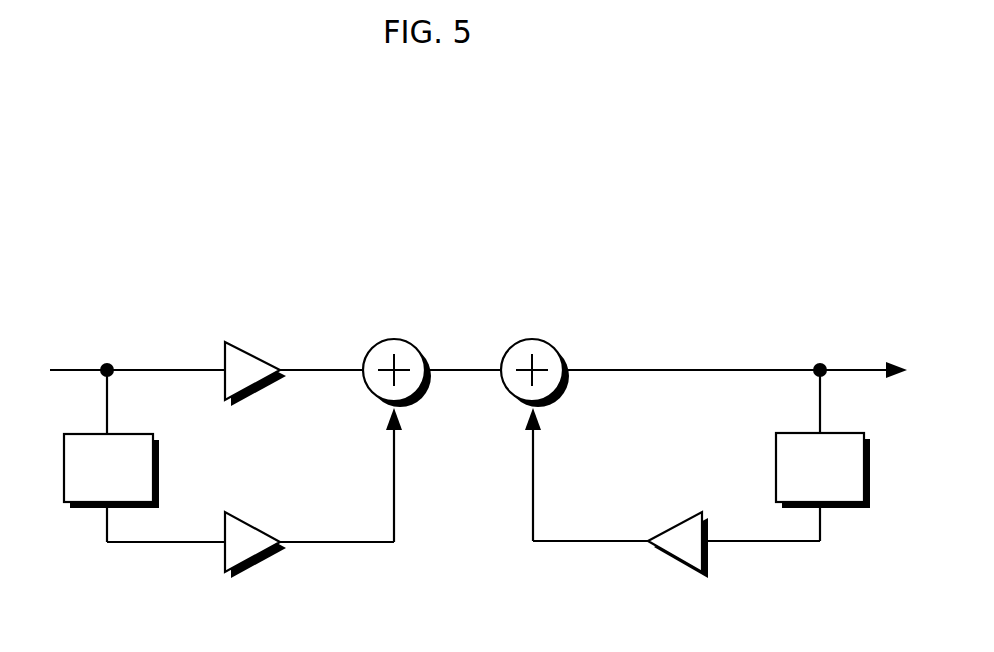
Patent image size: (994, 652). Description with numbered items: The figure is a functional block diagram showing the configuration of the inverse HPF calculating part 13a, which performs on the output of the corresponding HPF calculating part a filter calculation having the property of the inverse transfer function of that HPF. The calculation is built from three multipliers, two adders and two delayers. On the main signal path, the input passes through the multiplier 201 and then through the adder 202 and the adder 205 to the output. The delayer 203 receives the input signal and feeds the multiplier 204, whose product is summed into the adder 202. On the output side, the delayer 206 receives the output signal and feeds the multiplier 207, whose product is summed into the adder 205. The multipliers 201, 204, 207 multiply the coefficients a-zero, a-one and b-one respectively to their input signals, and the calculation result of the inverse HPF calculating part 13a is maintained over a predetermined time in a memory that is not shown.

The inverse HPF calculating part 13a is at (726, 242).
The multiplier 201 is at (252, 350).
The adder 202 is at (398, 339).
The delayer 203 is at (86, 433).
The multiplier 204 is at (250, 568).
The adder 205 is at (540, 339).
The delayer 206 is at (847, 432).
The multiplier 207 is at (678, 563).